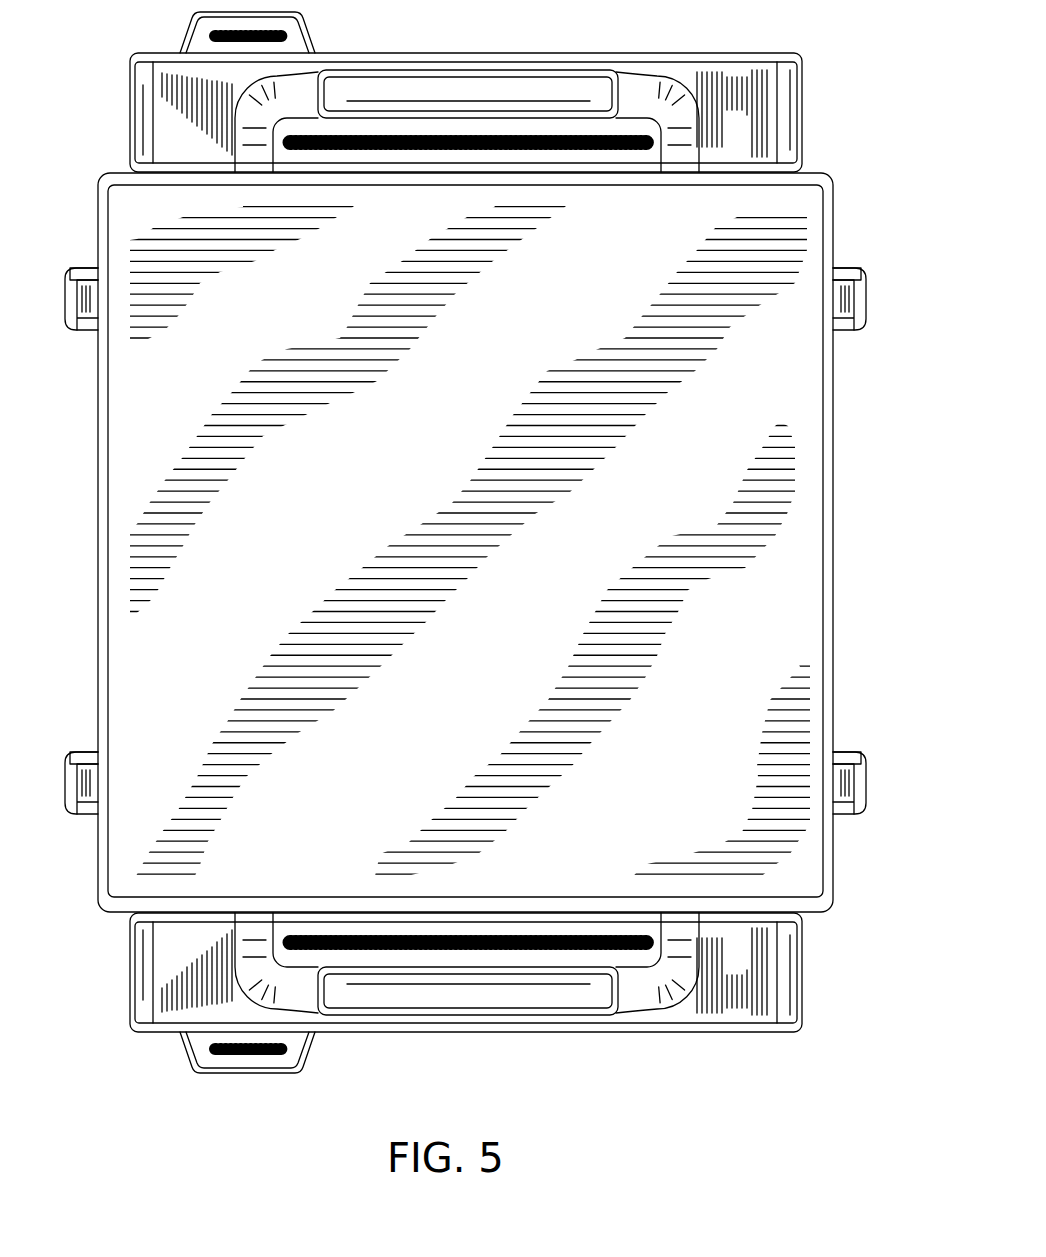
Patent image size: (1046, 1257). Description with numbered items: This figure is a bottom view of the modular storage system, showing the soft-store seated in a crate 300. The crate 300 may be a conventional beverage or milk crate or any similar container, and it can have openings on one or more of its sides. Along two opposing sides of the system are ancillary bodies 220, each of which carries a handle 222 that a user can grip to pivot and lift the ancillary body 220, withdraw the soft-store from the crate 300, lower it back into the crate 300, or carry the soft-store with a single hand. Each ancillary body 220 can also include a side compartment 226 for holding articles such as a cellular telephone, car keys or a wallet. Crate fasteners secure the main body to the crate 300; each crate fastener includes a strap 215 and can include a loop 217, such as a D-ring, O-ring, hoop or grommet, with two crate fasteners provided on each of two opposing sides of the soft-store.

The crate 300 is at (703, 600).
The handle 222 is at (483, 86).
The ancillary body 220 is at (736, 95).
The side compartment 226 is at (212, 33).
The loop 217 is at (73, 275).
The strap 215 is at (90, 330).